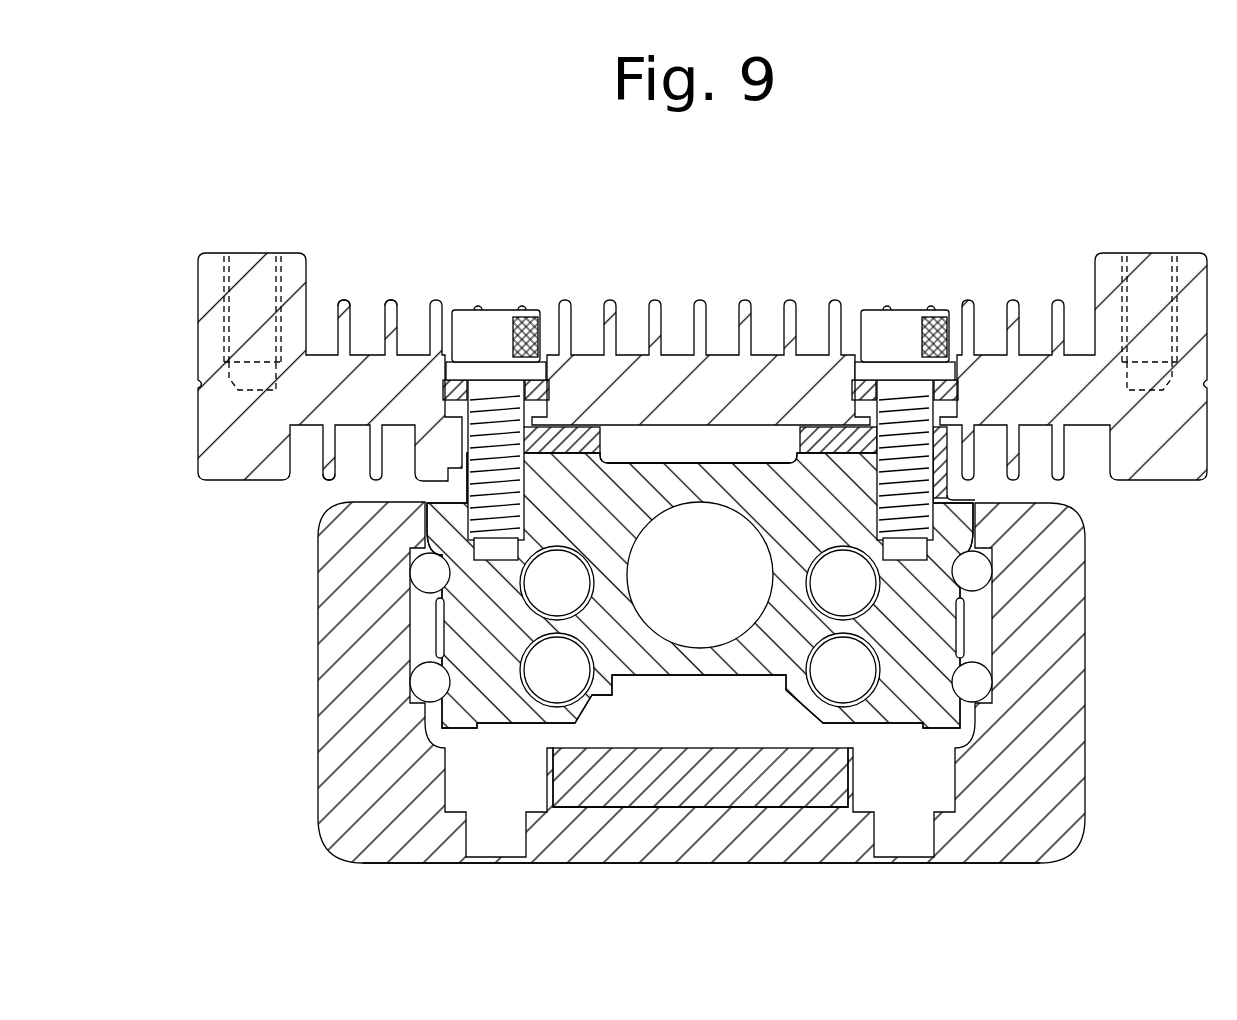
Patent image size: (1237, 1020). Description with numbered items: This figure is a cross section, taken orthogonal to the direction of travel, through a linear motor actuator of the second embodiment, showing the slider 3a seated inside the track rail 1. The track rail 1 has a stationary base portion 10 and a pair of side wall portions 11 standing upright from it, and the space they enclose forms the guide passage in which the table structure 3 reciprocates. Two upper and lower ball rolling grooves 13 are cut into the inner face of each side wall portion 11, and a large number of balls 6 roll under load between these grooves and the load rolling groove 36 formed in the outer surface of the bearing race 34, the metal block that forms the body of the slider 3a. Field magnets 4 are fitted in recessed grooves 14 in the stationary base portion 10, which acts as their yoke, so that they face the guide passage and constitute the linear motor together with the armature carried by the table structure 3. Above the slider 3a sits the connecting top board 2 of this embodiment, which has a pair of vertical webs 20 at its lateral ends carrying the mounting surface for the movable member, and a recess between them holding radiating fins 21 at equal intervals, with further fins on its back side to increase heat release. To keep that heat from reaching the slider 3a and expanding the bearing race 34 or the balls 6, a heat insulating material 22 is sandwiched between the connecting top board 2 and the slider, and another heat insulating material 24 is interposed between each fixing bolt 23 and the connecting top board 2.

The track rail 1 is at (702, 544).
The connecting top board 2 is at (702, 349).
The table structure 3 is at (702, 536).
The slider 3a is at (700, 591).
The field magnets 4 is at (782, 799).
The balls 6 is at (414, 575).
The stationary base portion 10 is at (733, 852).
The side wall portions 11 is at (692, 721).
The ball rolling grooves 13 is at (988, 562).
The recessed grooves 14 is at (646, 799).
The vertical webs 20 is at (306, 258).
The radiating fins 21 is at (393, 300).
The heat insulating material 22 is at (805, 440).
The fixing bolts 23 is at (469, 325).
The heat insulating material 24 is at (445, 388).
The bearing race 34 is at (578, 470).
The load rolling groove 36 is at (995, 585).